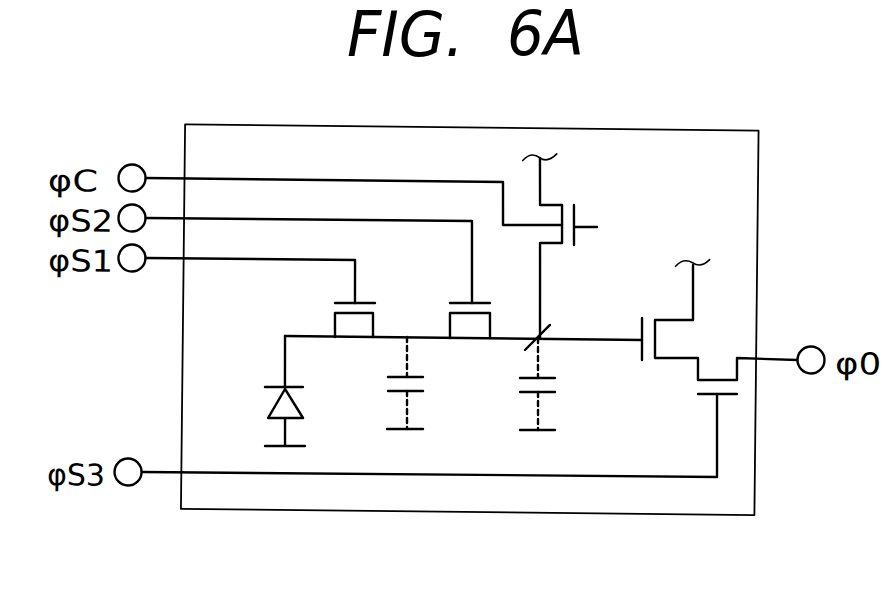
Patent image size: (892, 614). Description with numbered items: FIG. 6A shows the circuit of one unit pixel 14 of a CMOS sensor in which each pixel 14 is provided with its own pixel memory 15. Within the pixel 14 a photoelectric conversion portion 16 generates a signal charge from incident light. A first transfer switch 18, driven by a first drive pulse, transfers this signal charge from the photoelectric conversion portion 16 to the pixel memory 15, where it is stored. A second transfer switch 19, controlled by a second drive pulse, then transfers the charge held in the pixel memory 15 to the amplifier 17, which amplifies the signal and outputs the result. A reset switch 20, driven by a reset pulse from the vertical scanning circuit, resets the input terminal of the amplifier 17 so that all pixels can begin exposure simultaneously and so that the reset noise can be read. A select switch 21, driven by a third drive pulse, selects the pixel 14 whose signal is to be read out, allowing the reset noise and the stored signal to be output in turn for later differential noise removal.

The pixel 14 is at (287, 511).
The pixel memory 15 is at (419, 394).
The photoelectric conversion portion 16 is at (278, 402).
The amplifier 17 is at (640, 320).
The first transfer switch 18 is at (365, 303).
The second transfer switch 19 is at (477, 302).
The reset switch 20 is at (586, 221).
The select switch 21 is at (708, 391).